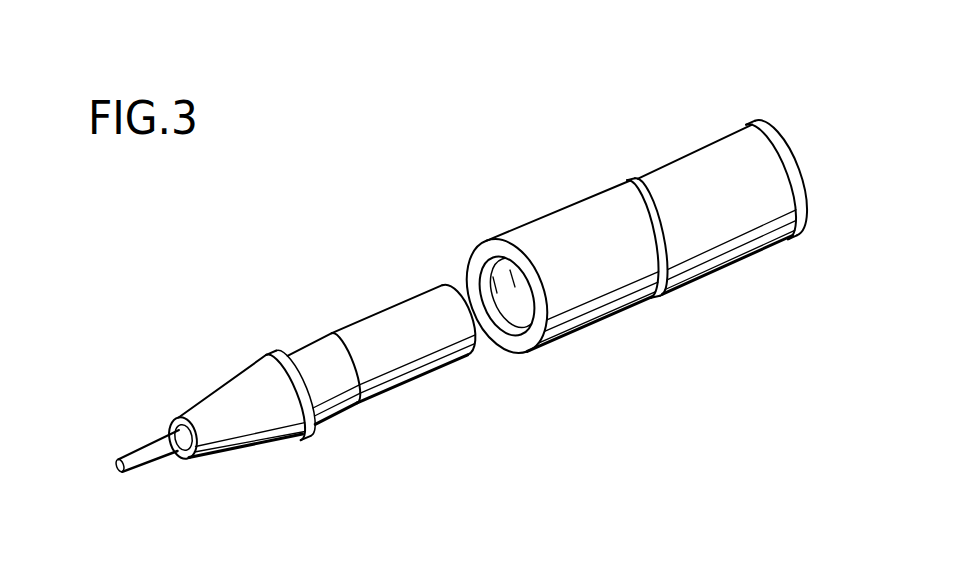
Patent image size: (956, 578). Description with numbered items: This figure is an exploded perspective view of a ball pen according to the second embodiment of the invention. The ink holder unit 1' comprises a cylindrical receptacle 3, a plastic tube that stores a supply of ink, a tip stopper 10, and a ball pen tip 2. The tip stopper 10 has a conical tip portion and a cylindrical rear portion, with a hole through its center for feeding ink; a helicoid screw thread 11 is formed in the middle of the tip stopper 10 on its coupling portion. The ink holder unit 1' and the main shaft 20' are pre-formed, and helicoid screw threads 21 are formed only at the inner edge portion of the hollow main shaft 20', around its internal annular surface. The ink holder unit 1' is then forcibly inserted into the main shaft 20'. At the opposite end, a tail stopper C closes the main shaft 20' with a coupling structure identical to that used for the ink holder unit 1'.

The ink holder unit 1' is at (294, 367).
The ball pen tip 2 is at (165, 452).
The cylindrical receptacle 3 is at (394, 330).
The tip stopper 10 is at (282, 413).
The helicoid screw thread 11 is at (357, 404).
The main shaft 20' is at (639, 243).
The helicoid screw threads 21 is at (518, 320).
The tail stopper C is at (779, 130).